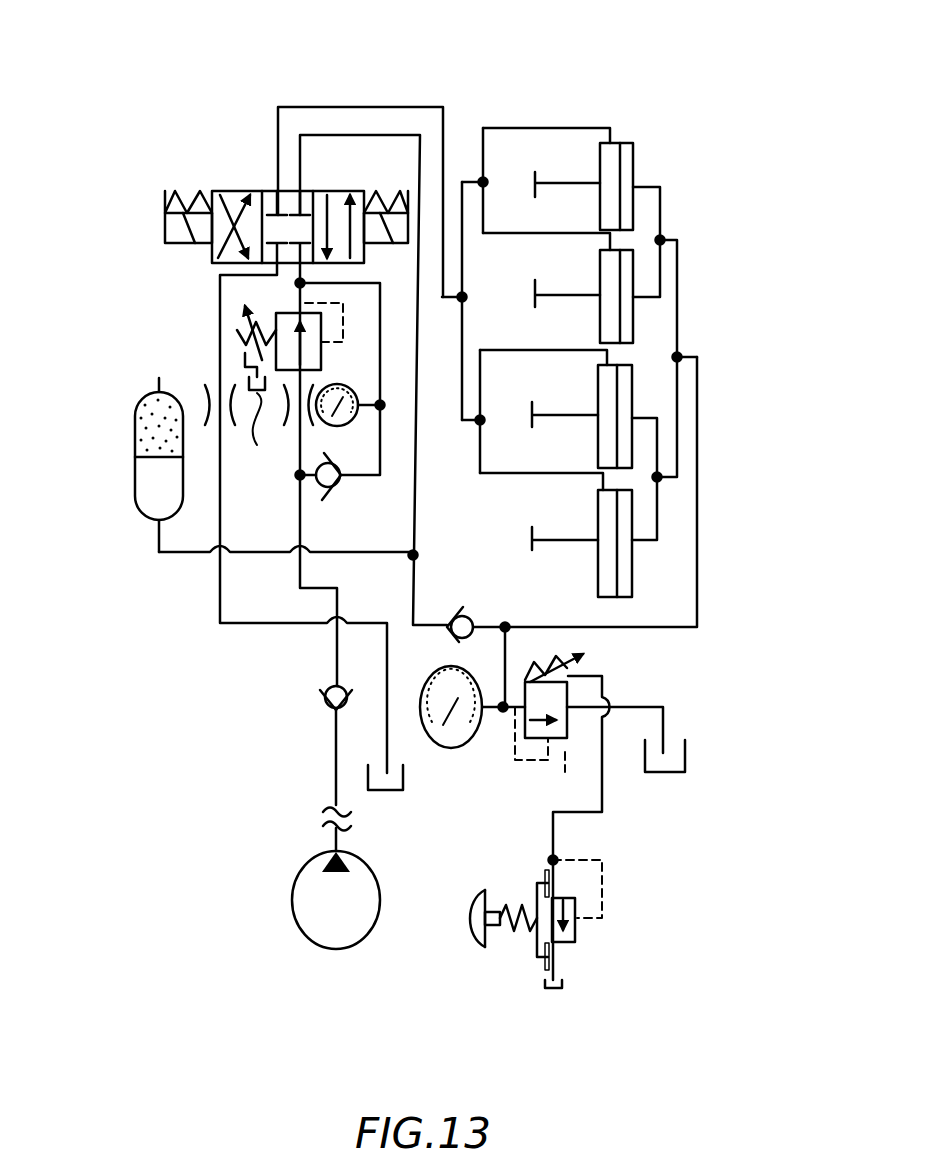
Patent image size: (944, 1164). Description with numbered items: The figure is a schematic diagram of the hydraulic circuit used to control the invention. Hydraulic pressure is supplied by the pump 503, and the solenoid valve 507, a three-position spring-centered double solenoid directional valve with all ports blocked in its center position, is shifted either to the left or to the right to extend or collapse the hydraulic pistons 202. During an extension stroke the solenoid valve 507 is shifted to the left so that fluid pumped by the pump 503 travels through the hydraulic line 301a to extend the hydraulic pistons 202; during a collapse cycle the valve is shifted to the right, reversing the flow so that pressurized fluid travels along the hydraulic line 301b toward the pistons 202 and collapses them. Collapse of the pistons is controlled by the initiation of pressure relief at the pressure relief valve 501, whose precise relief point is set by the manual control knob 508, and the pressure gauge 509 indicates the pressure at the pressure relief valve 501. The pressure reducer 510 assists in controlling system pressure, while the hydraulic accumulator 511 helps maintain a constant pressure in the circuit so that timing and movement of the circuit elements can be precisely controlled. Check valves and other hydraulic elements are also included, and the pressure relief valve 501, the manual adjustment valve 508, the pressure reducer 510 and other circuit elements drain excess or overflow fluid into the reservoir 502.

The hydraulic pistons 202 is at (633, 163).
The hydraulic line 301a is at (415, 128).
The hydraulic line 301b is at (352, 107).
The pressure relief valve 501 is at (585, 657).
The reservoir 502 is at (610, 1045).
The pump 503 is at (293, 893).
The solenoid valve 507 is at (255, 191).
The manual control knob 508 is at (472, 920).
The pressure gauge 509 is at (462, 748).
The pressure reducer 510 is at (267, 315).
The hydraulic accumulator 511 is at (152, 492).